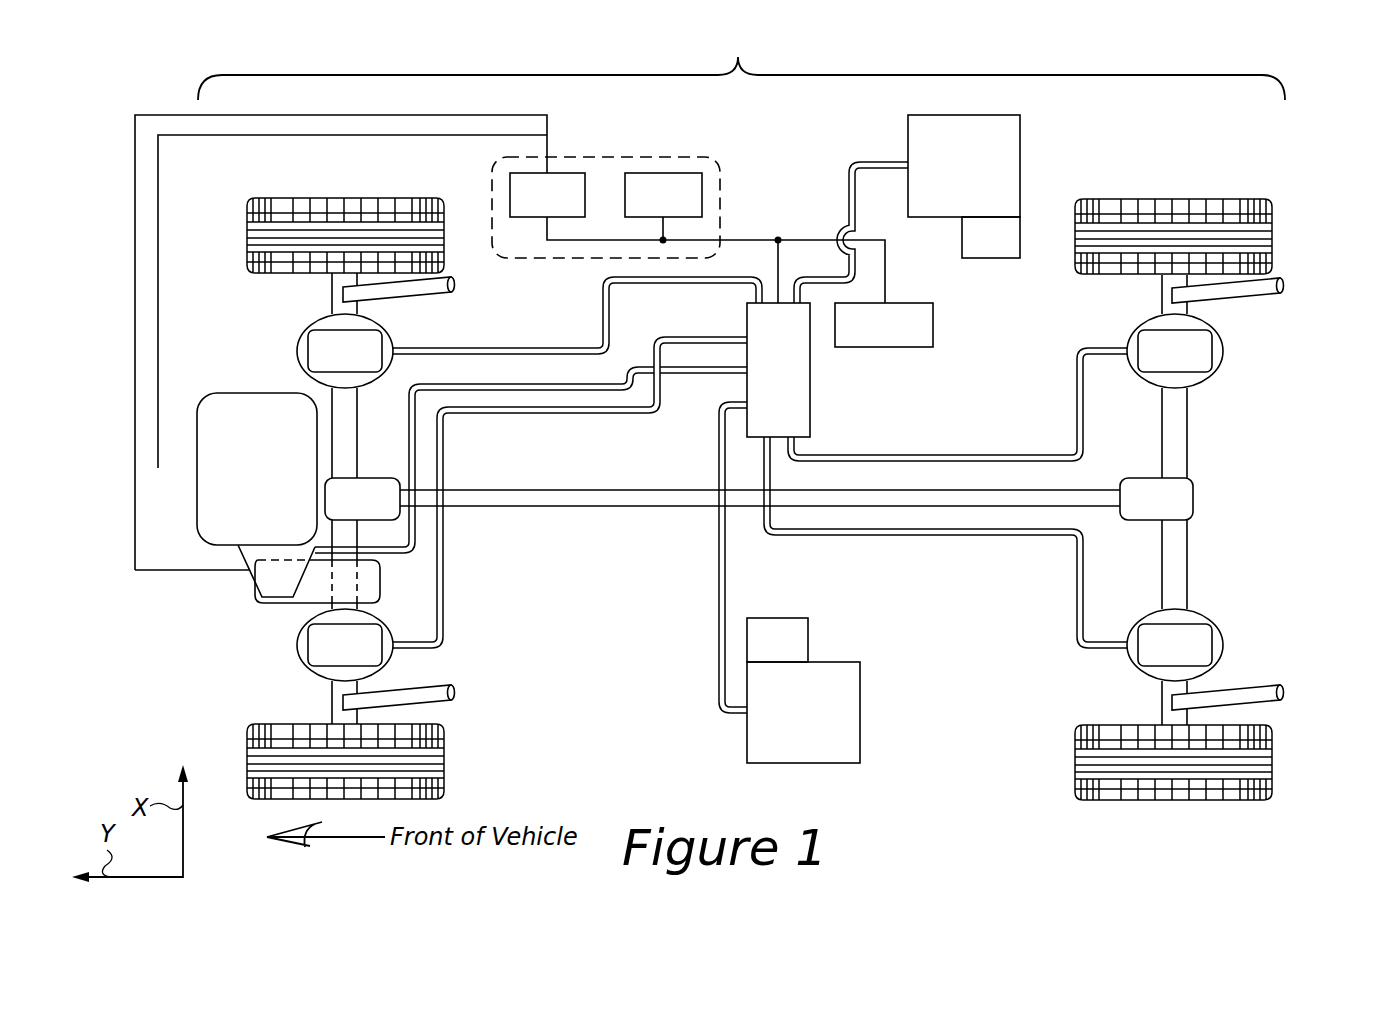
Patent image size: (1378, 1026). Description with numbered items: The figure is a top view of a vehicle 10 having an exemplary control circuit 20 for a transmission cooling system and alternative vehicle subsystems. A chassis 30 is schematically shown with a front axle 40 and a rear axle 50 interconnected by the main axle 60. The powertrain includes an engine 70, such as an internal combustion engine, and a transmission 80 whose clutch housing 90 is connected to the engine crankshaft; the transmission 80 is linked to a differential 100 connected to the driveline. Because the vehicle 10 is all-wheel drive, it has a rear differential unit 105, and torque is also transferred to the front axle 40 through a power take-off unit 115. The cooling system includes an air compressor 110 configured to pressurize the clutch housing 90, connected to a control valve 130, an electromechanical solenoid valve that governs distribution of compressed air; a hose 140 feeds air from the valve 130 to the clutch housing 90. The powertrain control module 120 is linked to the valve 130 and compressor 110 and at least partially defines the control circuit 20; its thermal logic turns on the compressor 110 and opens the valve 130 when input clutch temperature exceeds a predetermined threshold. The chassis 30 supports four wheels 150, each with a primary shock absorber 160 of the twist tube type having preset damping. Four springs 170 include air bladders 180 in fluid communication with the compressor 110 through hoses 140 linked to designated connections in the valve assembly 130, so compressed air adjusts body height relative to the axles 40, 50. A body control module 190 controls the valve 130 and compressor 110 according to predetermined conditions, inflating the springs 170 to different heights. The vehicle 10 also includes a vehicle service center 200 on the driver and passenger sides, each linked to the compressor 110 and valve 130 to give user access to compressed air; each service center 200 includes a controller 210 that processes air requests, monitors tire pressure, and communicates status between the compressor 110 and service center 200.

The vehicle 10 is at (741, 64).
The control circuit 20 is at (718, 158).
The chassis 30 is at (1188, 537).
The front axle 40 is at (352, 423).
The rear axle 50 is at (1187, 452).
The main axle 60 is at (1098, 478).
The engine 70 is at (200, 398).
The transmission 80 is at (267, 583).
The clutch housing 90 is at (282, 538).
The differential 100 is at (373, 597).
The rear differential unit 105 is at (1195, 496).
The air compressor 110 is at (933, 323).
The power take-off unit 115 is at (398, 481).
The powertrain control module 120 is at (582, 175).
The control valve 130 is at (812, 413).
The hose 140 is at (890, 163).
The wheels 150 is at (250, 226).
The primary shock absorbers 160 is at (435, 290).
The springs 170 is at (298, 351).
The air bladders 180 is at (378, 372).
The body control module 190 is at (643, 176).
The vehicle service center 200 is at (1020, 141).
The controller 210 is at (1020, 237).